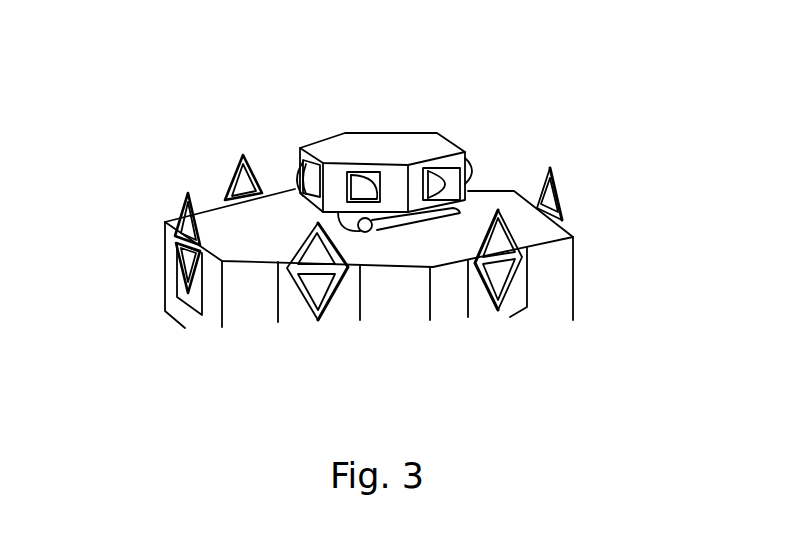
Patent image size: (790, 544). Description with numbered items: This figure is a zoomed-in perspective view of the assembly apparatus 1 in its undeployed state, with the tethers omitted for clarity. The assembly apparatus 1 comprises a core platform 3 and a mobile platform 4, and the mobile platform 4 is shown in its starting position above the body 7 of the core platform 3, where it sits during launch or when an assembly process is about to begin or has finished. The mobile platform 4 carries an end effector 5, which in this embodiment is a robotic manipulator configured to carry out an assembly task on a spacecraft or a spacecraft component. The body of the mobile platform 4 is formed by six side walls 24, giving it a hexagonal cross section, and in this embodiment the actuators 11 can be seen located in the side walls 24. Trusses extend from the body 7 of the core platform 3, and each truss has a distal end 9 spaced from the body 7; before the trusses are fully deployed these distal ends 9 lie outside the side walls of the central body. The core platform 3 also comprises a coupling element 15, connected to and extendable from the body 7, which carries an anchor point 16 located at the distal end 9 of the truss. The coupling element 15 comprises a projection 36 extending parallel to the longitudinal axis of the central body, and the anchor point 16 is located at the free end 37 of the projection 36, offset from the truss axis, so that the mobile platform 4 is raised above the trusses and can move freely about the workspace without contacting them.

The assembly apparatus 1 is at (233, 82).
The core platform 3 is at (247, 318).
The mobile platform 4 is at (410, 213).
The end effector 5 is at (433, 237).
The body 7 is at (218, 220).
The distal end 9 is at (173, 255).
The actuator 11 is at (467, 170).
The coupling element 15 is at (598, 151).
The anchor point 16 is at (562, 167).
The side wall 24 is at (335, 178).
The projection 36 is at (348, 268).
The free end 37 is at (497, 215).